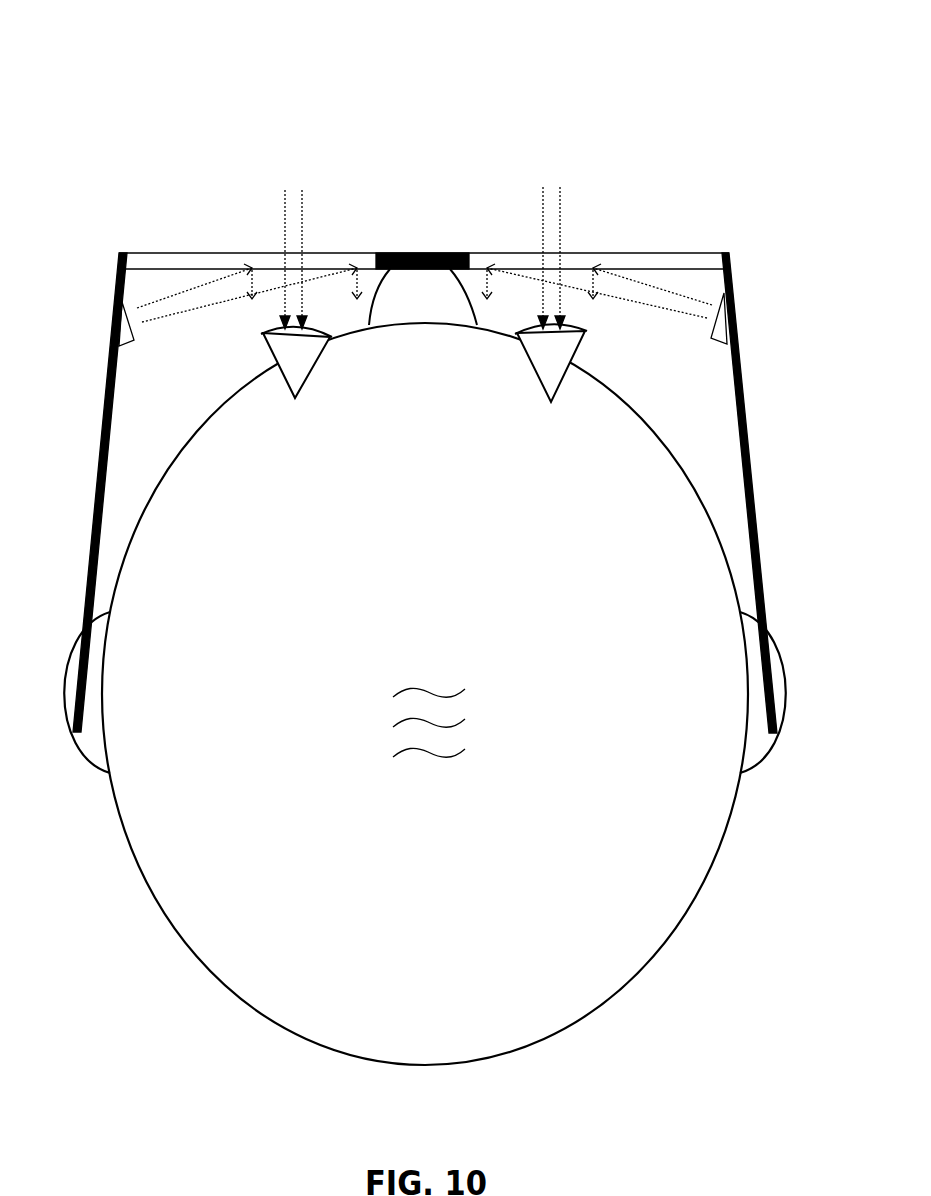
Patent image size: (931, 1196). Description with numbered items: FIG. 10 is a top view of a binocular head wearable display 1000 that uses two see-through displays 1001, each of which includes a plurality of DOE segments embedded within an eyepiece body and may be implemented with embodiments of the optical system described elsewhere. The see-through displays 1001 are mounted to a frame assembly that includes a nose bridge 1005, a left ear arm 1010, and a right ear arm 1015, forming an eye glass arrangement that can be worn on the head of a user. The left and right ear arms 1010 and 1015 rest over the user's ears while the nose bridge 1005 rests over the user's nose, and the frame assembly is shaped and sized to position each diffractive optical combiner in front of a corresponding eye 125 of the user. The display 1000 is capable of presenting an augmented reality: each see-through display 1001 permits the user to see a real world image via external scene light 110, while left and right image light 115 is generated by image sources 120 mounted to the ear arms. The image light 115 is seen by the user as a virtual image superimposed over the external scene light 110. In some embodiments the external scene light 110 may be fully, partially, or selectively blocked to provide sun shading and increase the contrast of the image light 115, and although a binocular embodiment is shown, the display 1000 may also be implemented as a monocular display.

The binocular head wearable display 1000 is at (702, 78).
The see-through display 1001 is at (128, 188).
The nose bridge 1005 is at (452, 252).
The left ear arm 1010 is at (96, 490).
The right ear arm 1015 is at (750, 490).
The external scene light 110 is at (285, 192).
The image light 115 is at (190, 310).
The image source 120 is at (122, 345).
The eye 125 is at (305, 385).